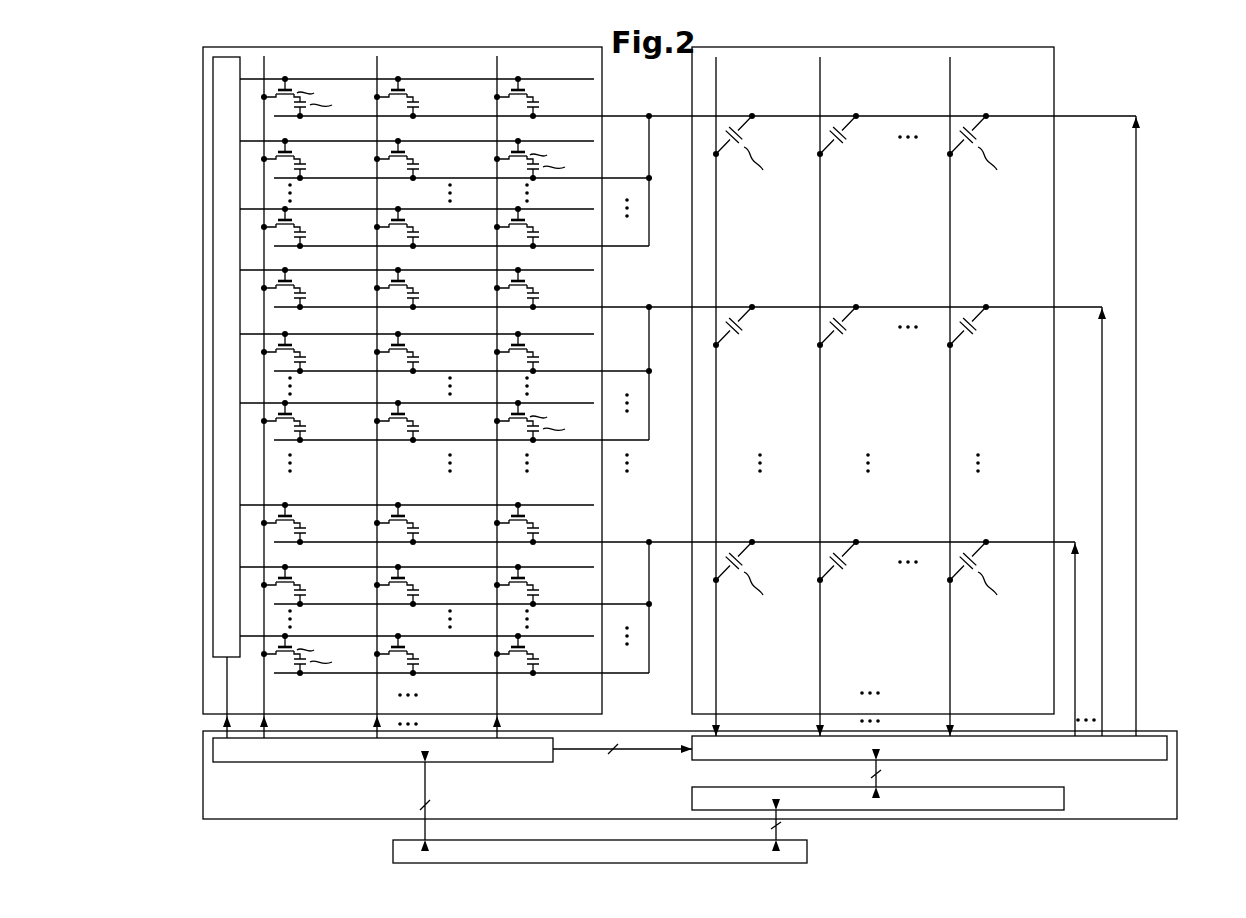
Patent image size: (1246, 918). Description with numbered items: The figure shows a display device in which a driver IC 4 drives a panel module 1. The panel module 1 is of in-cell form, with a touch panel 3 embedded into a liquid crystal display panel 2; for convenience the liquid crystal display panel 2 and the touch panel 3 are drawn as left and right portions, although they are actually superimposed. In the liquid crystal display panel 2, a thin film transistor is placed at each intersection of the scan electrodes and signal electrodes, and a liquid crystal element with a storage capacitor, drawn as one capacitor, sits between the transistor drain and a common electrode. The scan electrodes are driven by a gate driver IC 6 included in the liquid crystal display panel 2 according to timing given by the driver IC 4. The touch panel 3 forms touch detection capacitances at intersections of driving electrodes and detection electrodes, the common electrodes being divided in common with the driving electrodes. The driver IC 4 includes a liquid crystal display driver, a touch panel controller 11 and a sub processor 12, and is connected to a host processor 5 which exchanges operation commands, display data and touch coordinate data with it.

The panel module 1 is at (180, 108).
The liquid crystal display panel 2 is at (203, 175).
The touch panel 3 is at (1054, 74).
The driver IC 4 is at (203, 789).
The host processor 5 is at (807, 851).
The gate driver IC 6 is at (213, 590).
The touch panel controller 11 is at (1167, 742).
The sub processor 12 is at (1064, 796).